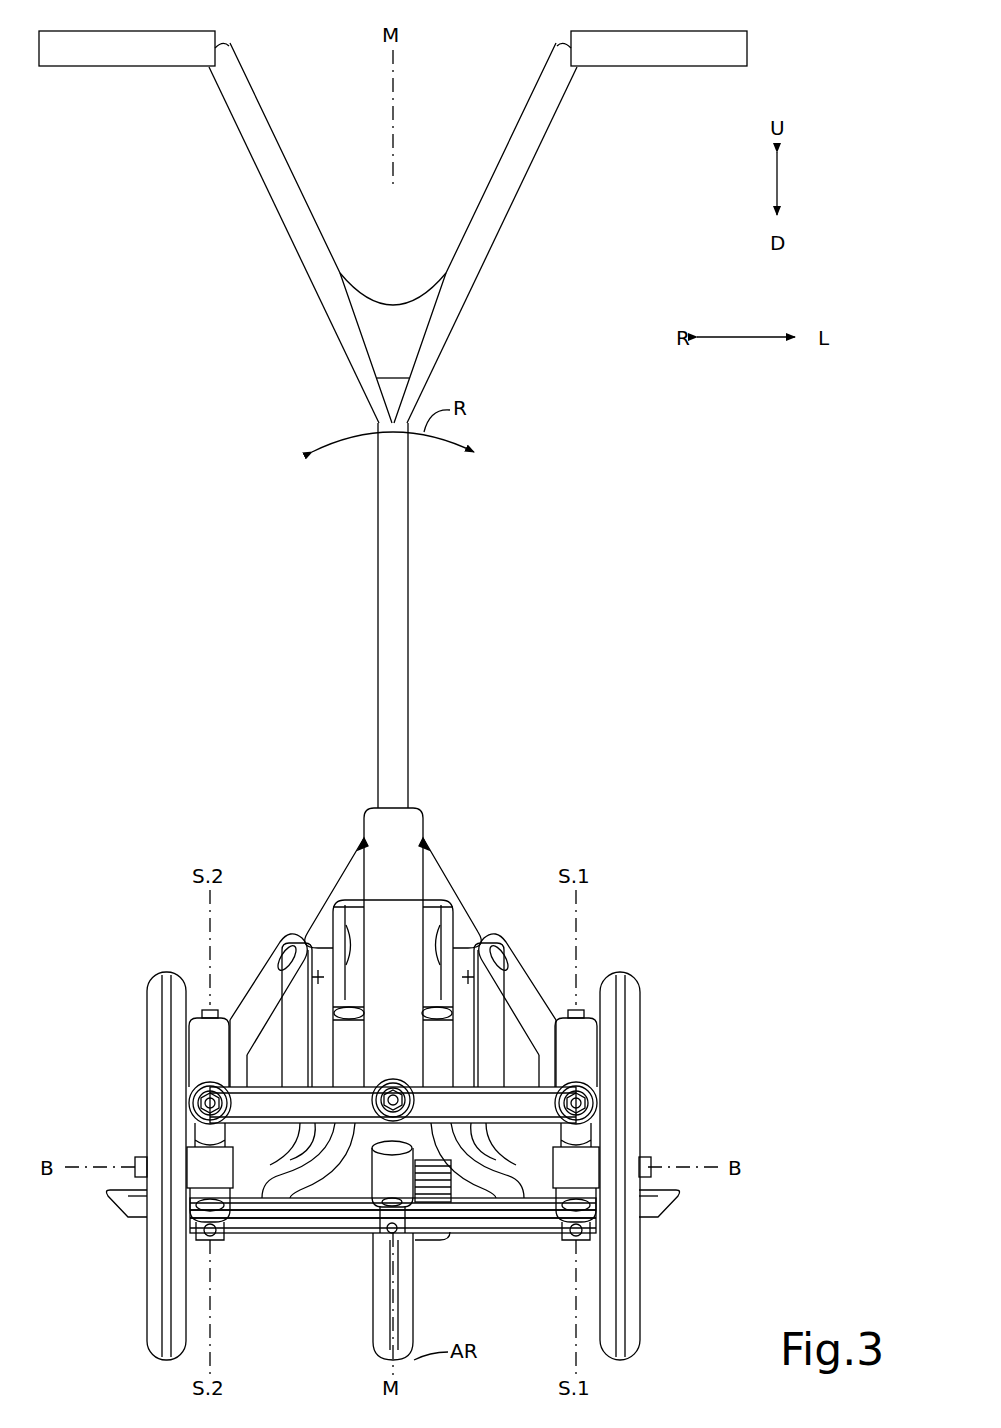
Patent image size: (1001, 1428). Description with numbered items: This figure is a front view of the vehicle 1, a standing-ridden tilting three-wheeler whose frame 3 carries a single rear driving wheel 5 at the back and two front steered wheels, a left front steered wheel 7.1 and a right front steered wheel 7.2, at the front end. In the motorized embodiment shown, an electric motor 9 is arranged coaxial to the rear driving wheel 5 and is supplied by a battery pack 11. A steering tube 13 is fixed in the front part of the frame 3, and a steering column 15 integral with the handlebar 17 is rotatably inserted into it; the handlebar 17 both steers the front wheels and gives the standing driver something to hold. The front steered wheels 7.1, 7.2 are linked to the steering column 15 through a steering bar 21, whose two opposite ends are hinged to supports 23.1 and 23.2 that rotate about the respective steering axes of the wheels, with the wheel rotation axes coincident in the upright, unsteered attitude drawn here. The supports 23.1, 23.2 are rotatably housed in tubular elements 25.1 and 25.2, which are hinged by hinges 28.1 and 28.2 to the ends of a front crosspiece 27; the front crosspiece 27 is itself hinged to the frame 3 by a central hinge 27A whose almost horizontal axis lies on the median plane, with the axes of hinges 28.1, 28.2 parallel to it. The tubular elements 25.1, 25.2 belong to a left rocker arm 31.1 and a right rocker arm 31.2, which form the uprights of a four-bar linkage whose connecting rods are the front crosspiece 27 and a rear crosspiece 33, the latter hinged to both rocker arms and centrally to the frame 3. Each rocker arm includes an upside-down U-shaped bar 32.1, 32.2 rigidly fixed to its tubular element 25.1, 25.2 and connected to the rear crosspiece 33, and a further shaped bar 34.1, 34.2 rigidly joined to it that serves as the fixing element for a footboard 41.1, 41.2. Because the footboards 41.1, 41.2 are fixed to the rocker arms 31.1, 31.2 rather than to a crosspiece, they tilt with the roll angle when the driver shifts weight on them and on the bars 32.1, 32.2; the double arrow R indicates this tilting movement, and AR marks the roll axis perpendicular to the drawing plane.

The vehicle 1 is at (708, 540).
The frame 3 is at (462, 903).
The rear driving wheel 5 is at (405, 1281).
The left front steered wheel 7.1 is at (632, 987).
The right front steered wheel 7.2 is at (160, 987).
The electric motor 9 is at (440, 1246).
The battery pack 11 is at (345, 980).
The steering tube 13 is at (392, 852).
The steering column 15 is at (398, 576).
The handlebar 17 is at (168, 50).
The steering bar 21 is at (294, 1210).
The support 23.1 is at (579, 1172).
The support 23.2 is at (207, 1172).
The tubular element 25.1 is at (579, 1048).
The tubular element 25.2 is at (207, 1048).
The front crosspiece 27 is at (258, 1097).
The hinge 27A is at (393, 1083).
The hinge 28.1 is at (591, 1100).
The hinge 28.2 is at (195, 1100).
The left rocker arm 31.1 is at (494, 943).
The right rocker arm 31.2 is at (292, 943).
The shaped bar 32.1 is at (528, 1000).
The shaped bar 32.2 is at (258, 1000).
The rear crosspiece 33 is at (345, 1222).
The shaped bar 34.1 is at (496, 1180).
The shaped bar 34.2 is at (290, 1180).
The footboard 41.1 is at (664, 1196).
The footboard 41.2 is at (122, 1196).